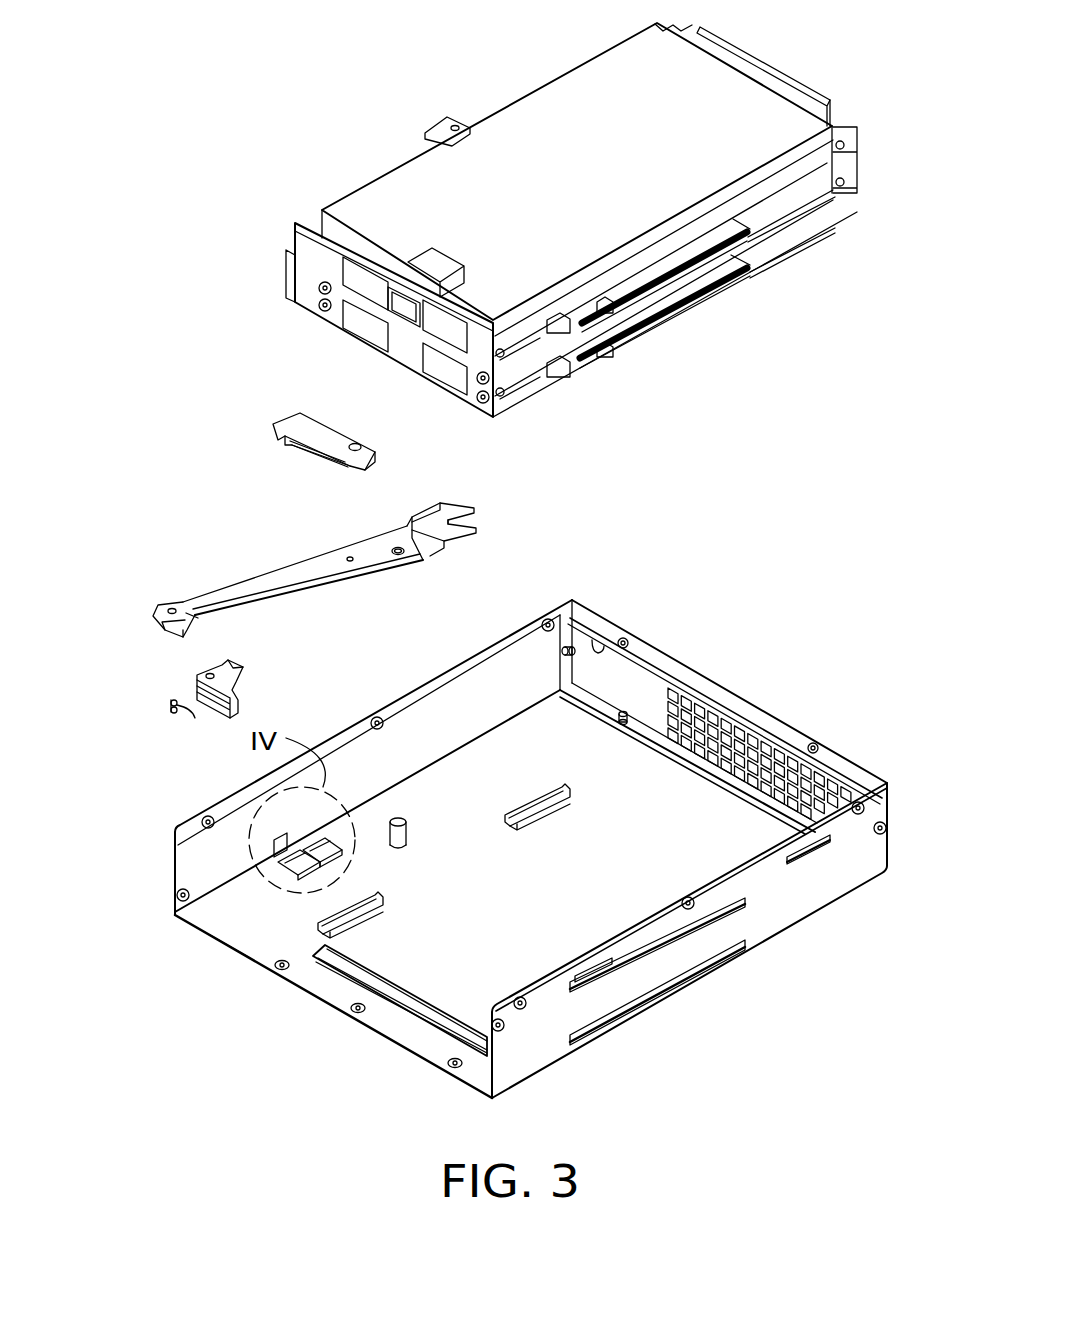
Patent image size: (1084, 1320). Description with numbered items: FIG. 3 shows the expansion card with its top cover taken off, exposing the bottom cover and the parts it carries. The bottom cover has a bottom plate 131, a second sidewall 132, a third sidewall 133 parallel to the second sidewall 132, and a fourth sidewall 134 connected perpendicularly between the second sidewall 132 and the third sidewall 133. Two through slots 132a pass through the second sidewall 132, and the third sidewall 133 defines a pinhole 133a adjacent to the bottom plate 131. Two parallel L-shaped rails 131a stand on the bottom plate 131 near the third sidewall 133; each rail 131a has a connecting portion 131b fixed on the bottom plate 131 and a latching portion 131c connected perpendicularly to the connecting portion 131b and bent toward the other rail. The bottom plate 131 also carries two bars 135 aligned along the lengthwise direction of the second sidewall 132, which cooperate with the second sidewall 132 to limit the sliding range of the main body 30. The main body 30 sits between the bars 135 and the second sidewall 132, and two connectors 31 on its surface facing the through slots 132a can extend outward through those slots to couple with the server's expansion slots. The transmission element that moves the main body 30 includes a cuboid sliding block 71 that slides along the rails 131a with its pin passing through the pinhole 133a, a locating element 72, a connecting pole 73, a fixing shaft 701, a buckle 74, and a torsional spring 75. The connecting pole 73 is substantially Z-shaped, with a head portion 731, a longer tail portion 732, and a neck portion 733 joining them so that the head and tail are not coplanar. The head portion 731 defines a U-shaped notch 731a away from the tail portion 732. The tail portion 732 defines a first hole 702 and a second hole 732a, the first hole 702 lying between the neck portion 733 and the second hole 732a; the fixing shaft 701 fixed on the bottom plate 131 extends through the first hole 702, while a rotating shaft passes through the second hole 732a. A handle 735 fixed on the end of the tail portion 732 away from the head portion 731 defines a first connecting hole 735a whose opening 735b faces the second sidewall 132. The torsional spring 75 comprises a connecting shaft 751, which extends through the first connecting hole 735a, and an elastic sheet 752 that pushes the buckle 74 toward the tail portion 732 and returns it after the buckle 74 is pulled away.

The main body 30 is at (605, 85).
The connectors 31 is at (725, 275).
The sliding block 71 is at (302, 423).
The locating element 72 is at (440, 133).
The connecting pole 73 is at (292, 553).
The head portion 731 is at (430, 512).
The notch 731a is at (465, 521).
The tail portion 732 is at (272, 585).
The second hole 732a is at (350, 557).
The neck portion 733 is at (430, 552).
The handle 735 is at (163, 612).
The first connecting hole 735a is at (172, 608).
The opening 735b is at (190, 619).
The first hole 702 is at (396, 555).
The buckle 74 is at (238, 676).
The torsional spring 75 is at (170, 705).
The connecting shaft 751 is at (176, 700).
The elastic sheet 752 is at (188, 716).
The bottom plate 131 is at (415, 1035).
The rails 131a is at (180, 990).
The connecting portion 131b is at (287, 878).
The latching portion 131c is at (302, 875).
The second sidewall 132 is at (797, 900).
The through slots 132a is at (630, 1010).
The third sidewall 133 is at (203, 845).
The pinhole 133a is at (280, 838).
The fourth sidewall 134 is at (757, 722).
The bars 135 is at (565, 797).
The fixing shaft 701 is at (408, 825).